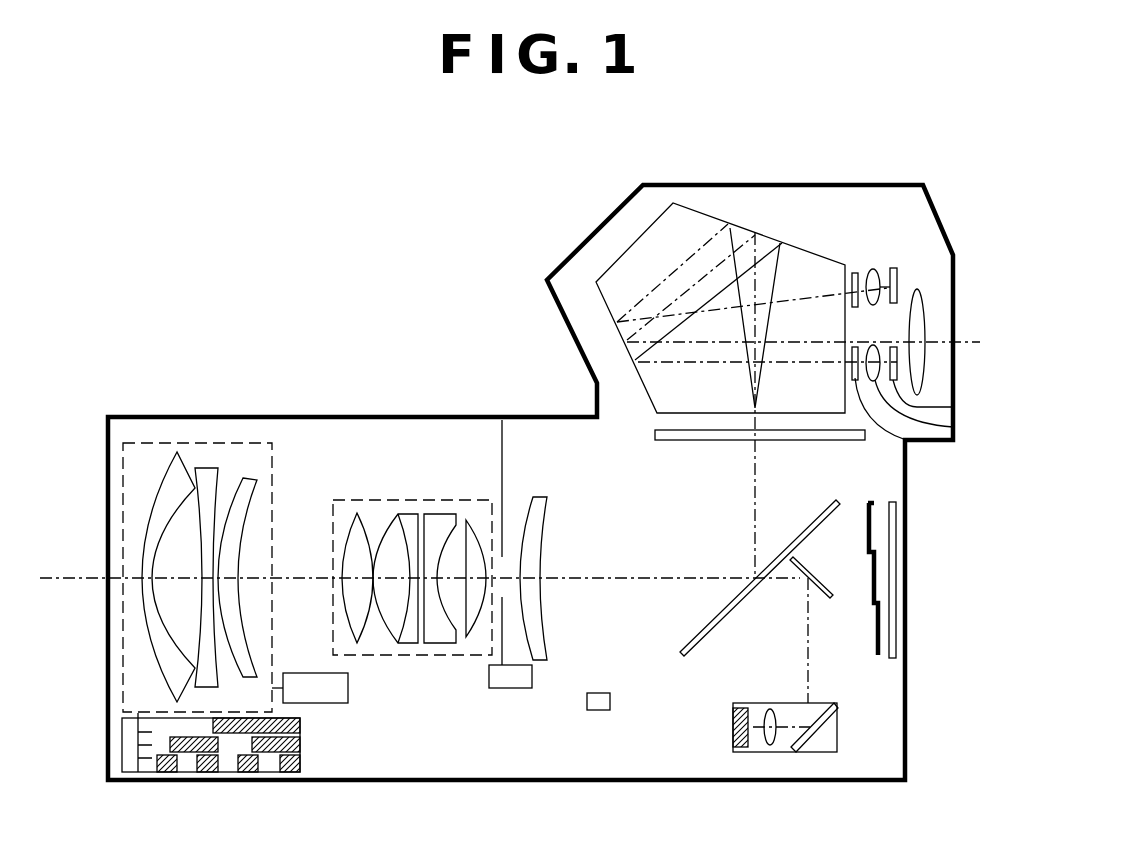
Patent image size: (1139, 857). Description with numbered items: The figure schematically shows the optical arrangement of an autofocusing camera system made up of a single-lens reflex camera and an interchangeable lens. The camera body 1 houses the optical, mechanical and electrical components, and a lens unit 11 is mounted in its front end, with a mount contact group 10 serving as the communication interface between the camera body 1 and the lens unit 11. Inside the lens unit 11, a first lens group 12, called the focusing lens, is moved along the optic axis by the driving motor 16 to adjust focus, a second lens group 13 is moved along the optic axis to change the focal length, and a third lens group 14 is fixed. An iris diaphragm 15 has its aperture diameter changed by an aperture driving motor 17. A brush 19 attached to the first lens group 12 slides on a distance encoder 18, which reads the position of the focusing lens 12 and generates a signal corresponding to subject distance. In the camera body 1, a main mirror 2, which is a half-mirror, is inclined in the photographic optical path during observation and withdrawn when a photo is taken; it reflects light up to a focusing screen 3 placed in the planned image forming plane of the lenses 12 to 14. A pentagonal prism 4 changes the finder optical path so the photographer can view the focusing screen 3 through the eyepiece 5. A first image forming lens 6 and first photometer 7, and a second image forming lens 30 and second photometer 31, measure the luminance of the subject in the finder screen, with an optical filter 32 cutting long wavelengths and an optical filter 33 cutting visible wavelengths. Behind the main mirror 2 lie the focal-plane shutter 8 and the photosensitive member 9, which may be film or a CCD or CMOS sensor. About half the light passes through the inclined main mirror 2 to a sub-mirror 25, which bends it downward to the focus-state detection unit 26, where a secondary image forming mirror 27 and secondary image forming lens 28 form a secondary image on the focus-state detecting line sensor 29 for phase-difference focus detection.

The camera body 1 is at (546, 280).
The main mirror 2 is at (806, 527).
The focusing screen 3 is at (693, 440).
The pentagonal prism 4 is at (632, 243).
The eyepiece 5 is at (925, 328).
The first image forming lens 6 is at (873, 268).
The first photometer 7 is at (898, 279).
The focal-plane shutter 8 is at (871, 502).
The photosensitive member 9 is at (893, 538).
The mount contact group 10 is at (610, 701).
The lens unit 11 is at (150, 417).
The first lens group 12 is at (231, 443).
The second lens group 13 is at (408, 500).
The third lens group 14 is at (542, 497).
The iris diaphragm 15 is at (502, 420).
The driving motor 16 is at (348, 688).
The aperture driving motor 17 is at (512, 688).
The distance encoder 18 is at (205, 772).
The brush 19 is at (138, 713).
The sub-mirror 25 is at (833, 595).
The focus-state detection unit 26 is at (762, 703).
The secondary image forming mirror 27 is at (817, 733).
The secondary image forming lens 28 is at (772, 752).
The focus-state detecting line sensor 29 is at (740, 752).
The second image forming lens 30 is at (953, 428).
The second photometer 31 is at (953, 406).
The optical filter 32 is at (855, 272).
The optical filter 33 is at (925, 444).